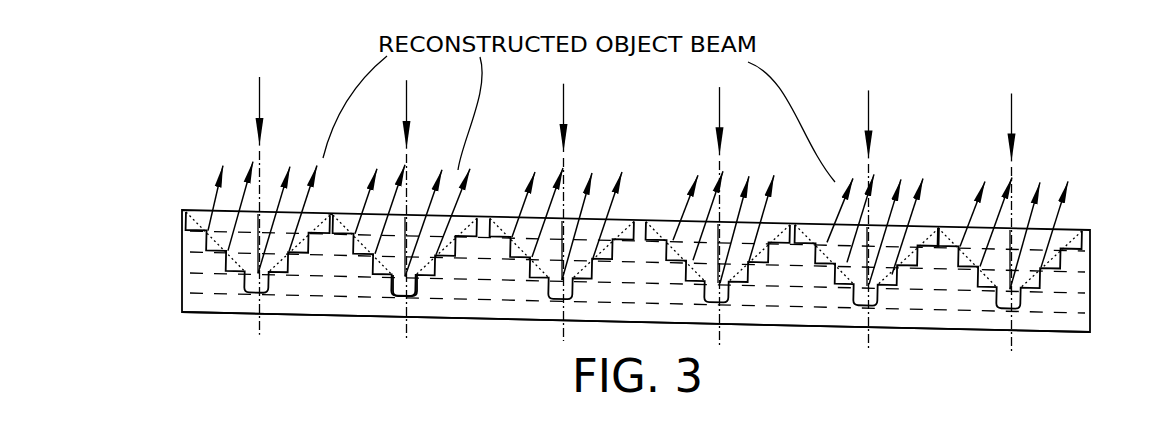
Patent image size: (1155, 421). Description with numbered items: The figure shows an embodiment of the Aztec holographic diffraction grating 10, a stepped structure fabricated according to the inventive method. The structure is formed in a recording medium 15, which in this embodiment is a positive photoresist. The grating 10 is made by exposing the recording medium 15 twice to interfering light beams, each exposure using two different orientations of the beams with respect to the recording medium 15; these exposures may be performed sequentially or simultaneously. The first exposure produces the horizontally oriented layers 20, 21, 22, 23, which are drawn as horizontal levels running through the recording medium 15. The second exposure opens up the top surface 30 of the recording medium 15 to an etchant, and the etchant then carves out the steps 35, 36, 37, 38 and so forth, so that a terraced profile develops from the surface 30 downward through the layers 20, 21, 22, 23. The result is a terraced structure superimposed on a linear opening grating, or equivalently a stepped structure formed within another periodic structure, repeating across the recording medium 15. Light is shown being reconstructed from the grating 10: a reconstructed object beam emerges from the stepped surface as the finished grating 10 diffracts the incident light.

The Aztec holographic diffraction grating 10 is at (503, 367).
The recording medium 15 is at (220, 303).
The horizontally oriented layer 20 is at (193, 233).
The horizontally oriented layer 21 is at (193, 253).
The horizontally oriented layer 22 is at (193, 275).
The horizontally oriented layer 23 is at (193, 296).
The surface 30 is at (208, 213).
The step 35 is at (355, 216).
The step 36 is at (373, 258).
The step 37 is at (393, 275).
The step 38 is at (410, 292).